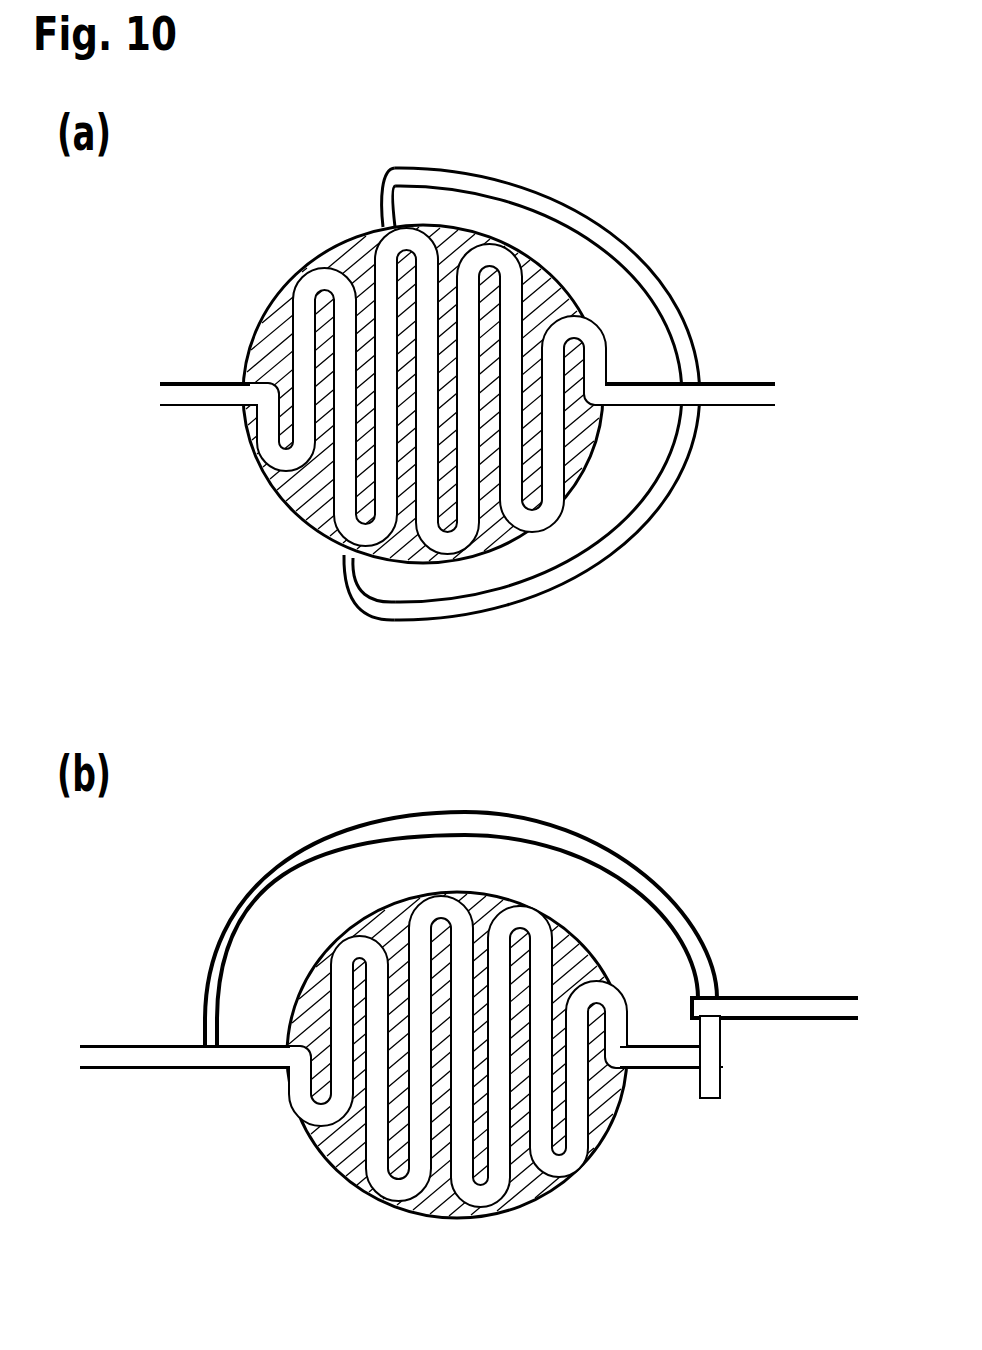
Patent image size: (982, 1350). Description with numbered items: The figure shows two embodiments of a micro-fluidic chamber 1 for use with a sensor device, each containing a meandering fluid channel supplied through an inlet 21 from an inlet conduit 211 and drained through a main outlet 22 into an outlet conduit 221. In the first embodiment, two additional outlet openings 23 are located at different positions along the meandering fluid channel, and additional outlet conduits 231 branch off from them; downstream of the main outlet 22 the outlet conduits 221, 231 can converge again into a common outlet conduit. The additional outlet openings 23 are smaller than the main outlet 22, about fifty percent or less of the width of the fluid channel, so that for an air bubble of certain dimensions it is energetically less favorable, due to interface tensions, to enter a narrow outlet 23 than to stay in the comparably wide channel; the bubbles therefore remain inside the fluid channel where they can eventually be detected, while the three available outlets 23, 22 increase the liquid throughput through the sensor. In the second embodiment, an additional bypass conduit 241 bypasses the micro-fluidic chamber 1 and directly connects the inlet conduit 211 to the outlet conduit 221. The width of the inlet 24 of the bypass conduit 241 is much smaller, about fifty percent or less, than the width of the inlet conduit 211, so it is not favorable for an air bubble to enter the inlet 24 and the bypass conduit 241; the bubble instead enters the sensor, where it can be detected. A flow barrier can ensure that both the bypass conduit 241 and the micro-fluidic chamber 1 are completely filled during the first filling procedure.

The micro-fluidic chamber 1 is at (427, 752).
The inlet 21 is at (427, 717).
The inlet conduit 211 is at (175, 672).
The main outlet 22 is at (680, 655).
The outlet conduit 221 is at (775, 741).
The additional outlet opening 23 is at (314, 378).
The additional outlet conduit 231 is at (549, 385).
The inlet of the bypass conduit 24 is at (191, 986).
The bypass conduit 241 is at (461, 868).